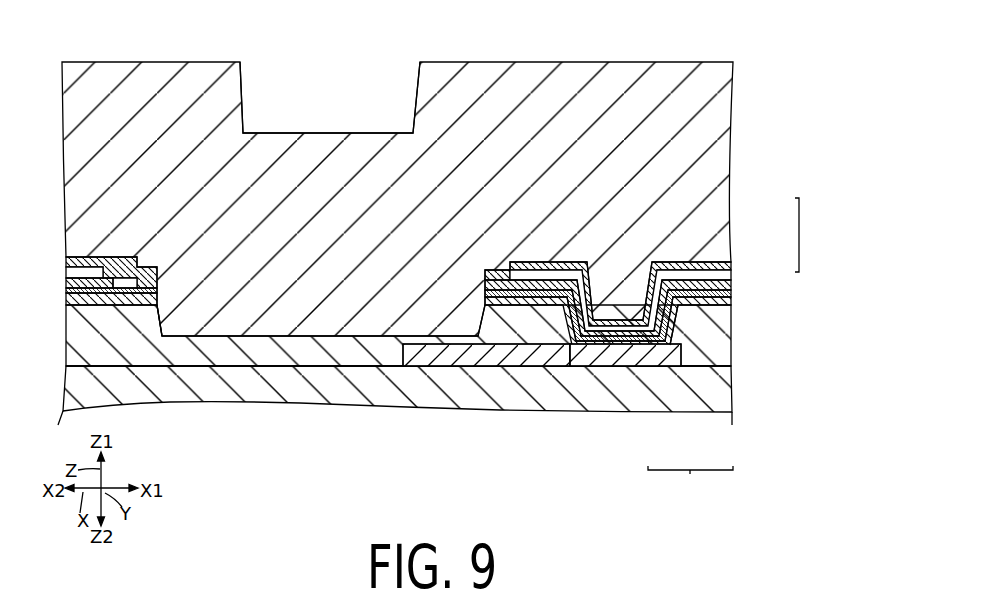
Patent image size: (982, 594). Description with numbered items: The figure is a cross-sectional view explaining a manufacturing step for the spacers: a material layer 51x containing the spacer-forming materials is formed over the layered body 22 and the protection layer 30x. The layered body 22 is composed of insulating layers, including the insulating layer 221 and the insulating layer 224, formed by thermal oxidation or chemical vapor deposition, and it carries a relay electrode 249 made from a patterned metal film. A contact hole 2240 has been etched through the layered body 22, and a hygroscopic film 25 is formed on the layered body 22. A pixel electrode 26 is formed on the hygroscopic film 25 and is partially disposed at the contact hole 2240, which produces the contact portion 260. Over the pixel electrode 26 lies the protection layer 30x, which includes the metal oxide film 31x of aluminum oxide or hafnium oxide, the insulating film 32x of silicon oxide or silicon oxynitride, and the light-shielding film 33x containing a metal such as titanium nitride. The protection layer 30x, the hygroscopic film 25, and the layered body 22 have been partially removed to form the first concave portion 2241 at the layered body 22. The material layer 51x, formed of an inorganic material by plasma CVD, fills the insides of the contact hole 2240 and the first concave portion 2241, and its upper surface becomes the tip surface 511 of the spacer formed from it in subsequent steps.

The tip surface 511 is at (410, 105).
The material layer 51x is at (683, 190).
The light-shielding film 33x is at (714, 258).
The insulating film 32x is at (728, 274).
The metal oxide film 31x is at (736, 283).
The protection layer 30x is at (813, 235).
The pixel electrode 26 is at (735, 293).
The hygroscopic film 25 is at (714, 305).
The contact portion 260 is at (667, 325).
The relay electrode 249 is at (488, 357).
The contact hole 2240 is at (585, 350).
The first concave portion 2241 is at (163, 317).
The insulating layer 221 is at (673, 393).
The insulating layer 224 is at (703, 370).
The layered body 22 is at (690, 481).